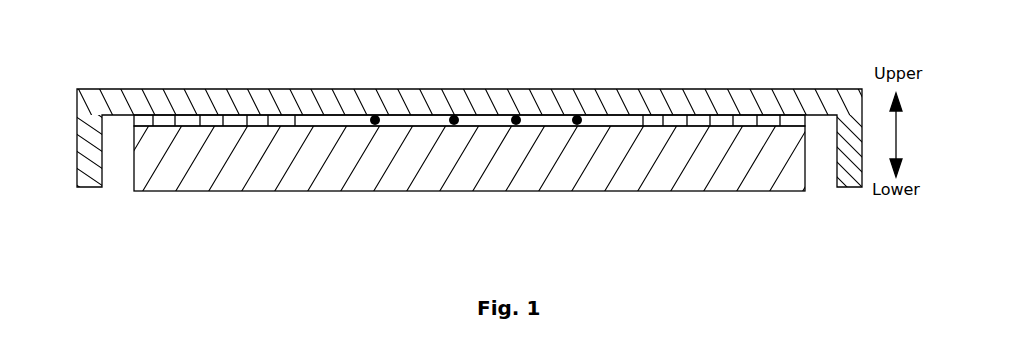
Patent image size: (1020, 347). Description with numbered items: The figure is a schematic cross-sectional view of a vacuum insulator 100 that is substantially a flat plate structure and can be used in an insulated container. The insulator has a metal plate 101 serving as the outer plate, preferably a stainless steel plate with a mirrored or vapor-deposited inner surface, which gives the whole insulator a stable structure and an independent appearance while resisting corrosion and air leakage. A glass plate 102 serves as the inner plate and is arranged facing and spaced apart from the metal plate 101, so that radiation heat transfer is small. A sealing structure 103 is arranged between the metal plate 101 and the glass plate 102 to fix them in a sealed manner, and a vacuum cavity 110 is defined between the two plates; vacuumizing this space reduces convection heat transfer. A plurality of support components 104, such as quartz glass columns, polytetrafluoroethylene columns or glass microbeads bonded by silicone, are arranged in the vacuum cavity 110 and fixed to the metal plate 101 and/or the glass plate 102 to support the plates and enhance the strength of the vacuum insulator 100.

The vacuum insulator 100 is at (104, 68).
The metal plate 101 is at (641, 107).
The glass plate 102 is at (635, 183).
The sealing structure 103 is at (717, 118).
The support components 104 is at (453, 114).
The vacuum cavity 110 is at (545, 118).